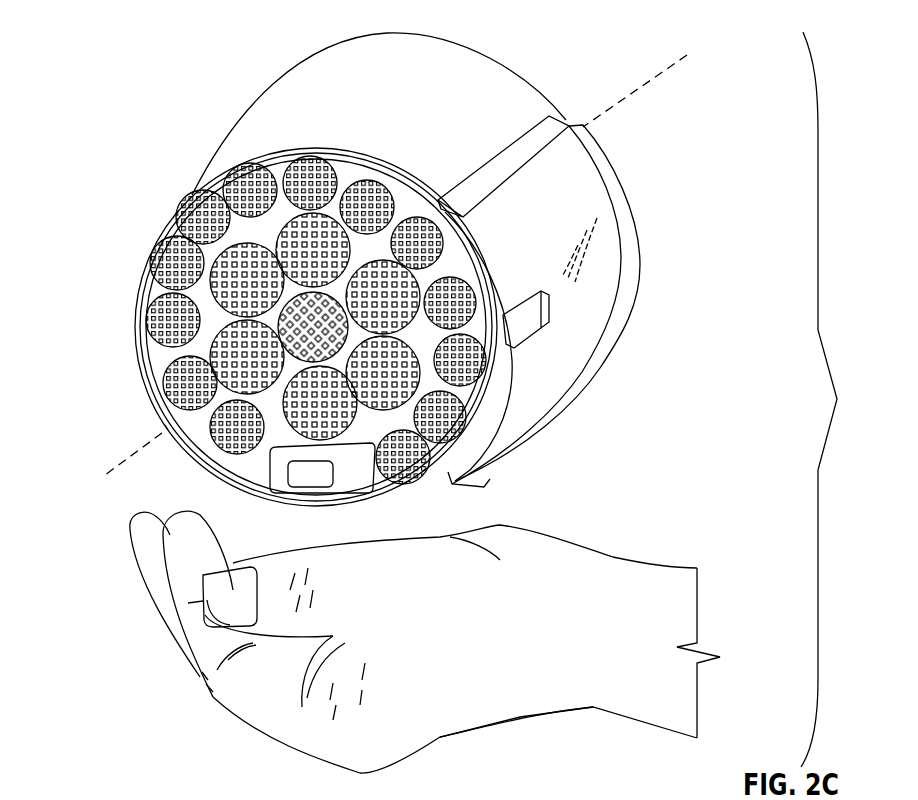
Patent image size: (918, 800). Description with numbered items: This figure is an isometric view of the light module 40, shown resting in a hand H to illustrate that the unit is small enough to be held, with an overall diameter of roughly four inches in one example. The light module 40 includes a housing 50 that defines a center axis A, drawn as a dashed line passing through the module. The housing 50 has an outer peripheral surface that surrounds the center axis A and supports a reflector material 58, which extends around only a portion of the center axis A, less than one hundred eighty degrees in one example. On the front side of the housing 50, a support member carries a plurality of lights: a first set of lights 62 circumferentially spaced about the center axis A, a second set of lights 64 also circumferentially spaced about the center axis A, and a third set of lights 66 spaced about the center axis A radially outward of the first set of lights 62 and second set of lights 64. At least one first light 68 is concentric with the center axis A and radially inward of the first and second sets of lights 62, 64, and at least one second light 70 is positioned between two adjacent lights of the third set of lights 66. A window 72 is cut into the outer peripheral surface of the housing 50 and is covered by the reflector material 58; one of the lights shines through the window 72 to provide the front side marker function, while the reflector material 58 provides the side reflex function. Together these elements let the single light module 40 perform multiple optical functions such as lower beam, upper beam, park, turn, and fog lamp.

The light module 40 is at (708, 77).
The housing 50 is at (500, 63).
The reflector material 58 is at (622, 330).
The first set of lights 62 is at (336, 303).
The second set of lights 64 is at (178, 407).
The third set of lights 66 is at (215, 168).
The first light 68 is at (168, 427).
The second light 70 is at (328, 462).
The window 72 is at (530, 320).
The center axis A is at (668, 68).
The hand H is at (603, 570).